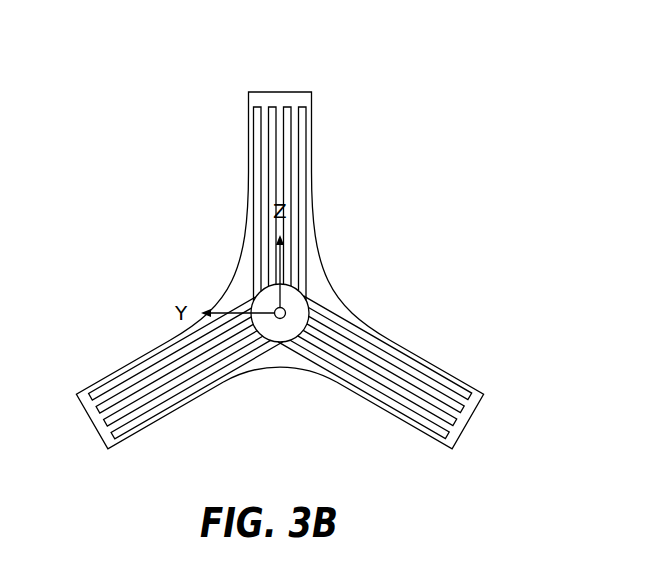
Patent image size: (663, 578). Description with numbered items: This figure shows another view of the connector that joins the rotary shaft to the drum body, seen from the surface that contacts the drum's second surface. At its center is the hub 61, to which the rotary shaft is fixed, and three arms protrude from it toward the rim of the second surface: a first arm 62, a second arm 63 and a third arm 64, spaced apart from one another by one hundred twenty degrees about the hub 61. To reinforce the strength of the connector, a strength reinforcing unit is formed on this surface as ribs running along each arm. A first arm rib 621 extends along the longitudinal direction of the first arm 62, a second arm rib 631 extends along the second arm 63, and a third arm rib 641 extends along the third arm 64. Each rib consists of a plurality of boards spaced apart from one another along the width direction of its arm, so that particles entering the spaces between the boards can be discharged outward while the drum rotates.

The hub 61 is at (310, 290).
The first arm 62 is at (282, 90).
The first arm rib 621 is at (300, 204).
The second arm 63 is at (95, 418).
The second arm rib 631 is at (163, 362).
The third arm 64 is at (470, 422).
The third arm rib 641 is at (413, 372).